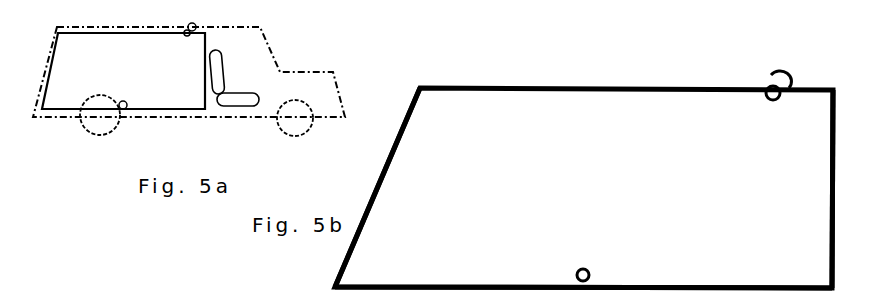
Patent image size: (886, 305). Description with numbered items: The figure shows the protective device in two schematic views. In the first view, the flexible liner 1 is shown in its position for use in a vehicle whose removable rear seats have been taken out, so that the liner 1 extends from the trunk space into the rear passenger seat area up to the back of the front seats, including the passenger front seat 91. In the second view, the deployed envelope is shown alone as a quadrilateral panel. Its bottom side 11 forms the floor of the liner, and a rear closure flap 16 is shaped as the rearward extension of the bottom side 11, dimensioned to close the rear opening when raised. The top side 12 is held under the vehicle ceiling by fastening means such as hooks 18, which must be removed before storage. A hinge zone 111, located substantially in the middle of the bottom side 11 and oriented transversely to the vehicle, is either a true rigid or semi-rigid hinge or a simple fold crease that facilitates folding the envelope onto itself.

In FIG. 5A, the flexible liner 1 is at (160, 90).
In FIG. 5A, the passenger front seat 91 is at (230, 106).
In FIG. 5B, the bottom side 11 is at (482, 283).
In FIG. 5B, the top side 12 is at (598, 92).
In FIG. 5B, the rear closure flap 16 is at (388, 167).
In FIG. 5B, the hooks 18 is at (798, 65).
In FIG. 5B, the hinge zone 111 is at (590, 268).